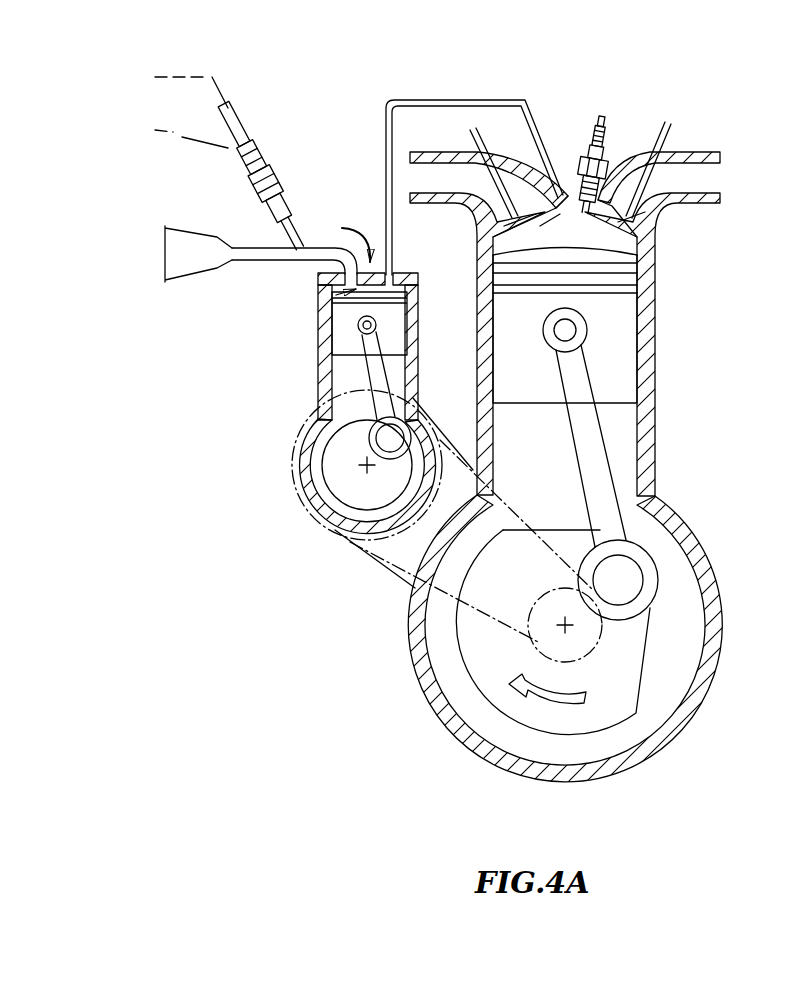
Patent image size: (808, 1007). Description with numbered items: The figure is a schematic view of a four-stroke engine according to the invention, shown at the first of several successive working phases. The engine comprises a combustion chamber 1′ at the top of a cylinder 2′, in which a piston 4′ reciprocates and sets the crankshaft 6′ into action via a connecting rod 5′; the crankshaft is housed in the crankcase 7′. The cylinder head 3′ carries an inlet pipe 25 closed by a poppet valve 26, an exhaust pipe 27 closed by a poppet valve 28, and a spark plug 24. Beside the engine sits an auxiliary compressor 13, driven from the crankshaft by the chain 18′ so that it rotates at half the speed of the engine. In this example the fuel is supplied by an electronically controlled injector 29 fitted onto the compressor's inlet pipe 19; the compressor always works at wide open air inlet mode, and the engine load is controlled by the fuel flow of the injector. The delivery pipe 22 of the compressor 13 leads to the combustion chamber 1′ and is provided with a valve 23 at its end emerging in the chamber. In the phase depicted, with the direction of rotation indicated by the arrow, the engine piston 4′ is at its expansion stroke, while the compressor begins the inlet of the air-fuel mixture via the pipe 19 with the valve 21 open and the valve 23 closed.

The combustion chamber 1′ is at (598, 238).
The cylinder 2′ is at (660, 327).
The cylinder head 3′ is at (566, 182).
The piston 4′ is at (622, 360).
The connecting rod 5′ is at (600, 465).
The crankshaft 6′ is at (606, 705).
The crankcase 7′ is at (422, 700).
The auxiliary compressor 13 is at (280, 400).
The chain 18′ is at (383, 558).
The compressor's inlet pipe 19 is at (320, 243).
The valve 21 is at (323, 310).
The delivery pipe 22 is at (445, 98).
The valve 23 is at (556, 220).
The spark plug 24 is at (600, 110).
The inlet pipe 25 is at (462, 182).
The poppet valve 26 is at (480, 139).
The exhaust pipe 27 is at (680, 190).
The poppet valve 28 is at (666, 126).
The fuel injector 29 is at (265, 132).